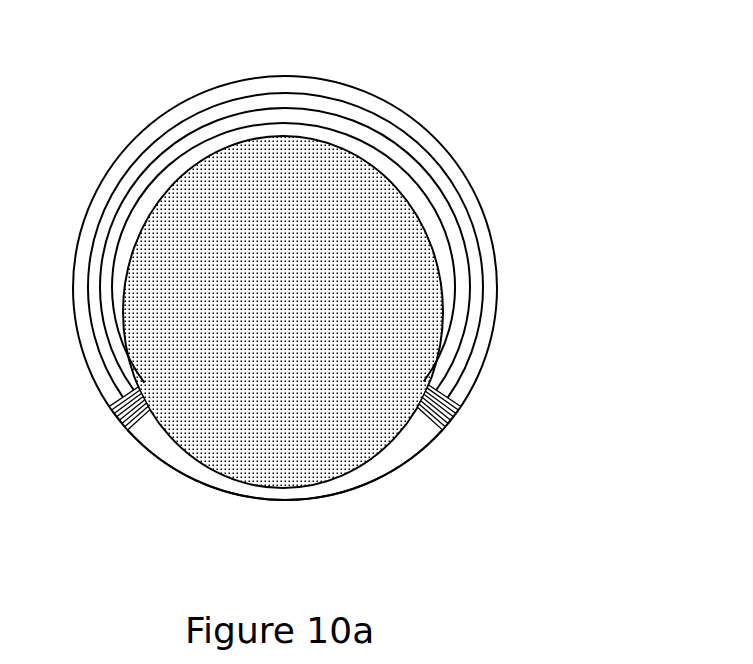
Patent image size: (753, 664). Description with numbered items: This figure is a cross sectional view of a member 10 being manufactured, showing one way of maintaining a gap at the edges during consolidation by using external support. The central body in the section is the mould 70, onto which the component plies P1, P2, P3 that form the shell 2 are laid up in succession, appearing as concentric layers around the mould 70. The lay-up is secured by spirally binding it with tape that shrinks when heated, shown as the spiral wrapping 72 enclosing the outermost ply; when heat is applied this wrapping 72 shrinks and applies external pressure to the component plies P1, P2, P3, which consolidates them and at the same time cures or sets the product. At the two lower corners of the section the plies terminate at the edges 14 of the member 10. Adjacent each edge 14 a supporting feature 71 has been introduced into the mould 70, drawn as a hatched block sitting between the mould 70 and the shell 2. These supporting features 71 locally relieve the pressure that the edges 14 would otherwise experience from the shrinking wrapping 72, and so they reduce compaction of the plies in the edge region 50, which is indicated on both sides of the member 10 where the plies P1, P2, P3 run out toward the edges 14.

The member 10 is at (637, 177).
The shell 2 is at (142, 136).
The spiral wrapping 72 is at (373, 95).
The first component ply P1 is at (446, 172).
The second component ply P2 is at (447, 209).
The third component ply P3 is at (448, 246).
The mould 70 is at (352, 408).
The supporting feature 71 is at (442, 430).
The edge region 50 is at (500, 357).
The edge 14 is at (462, 407).